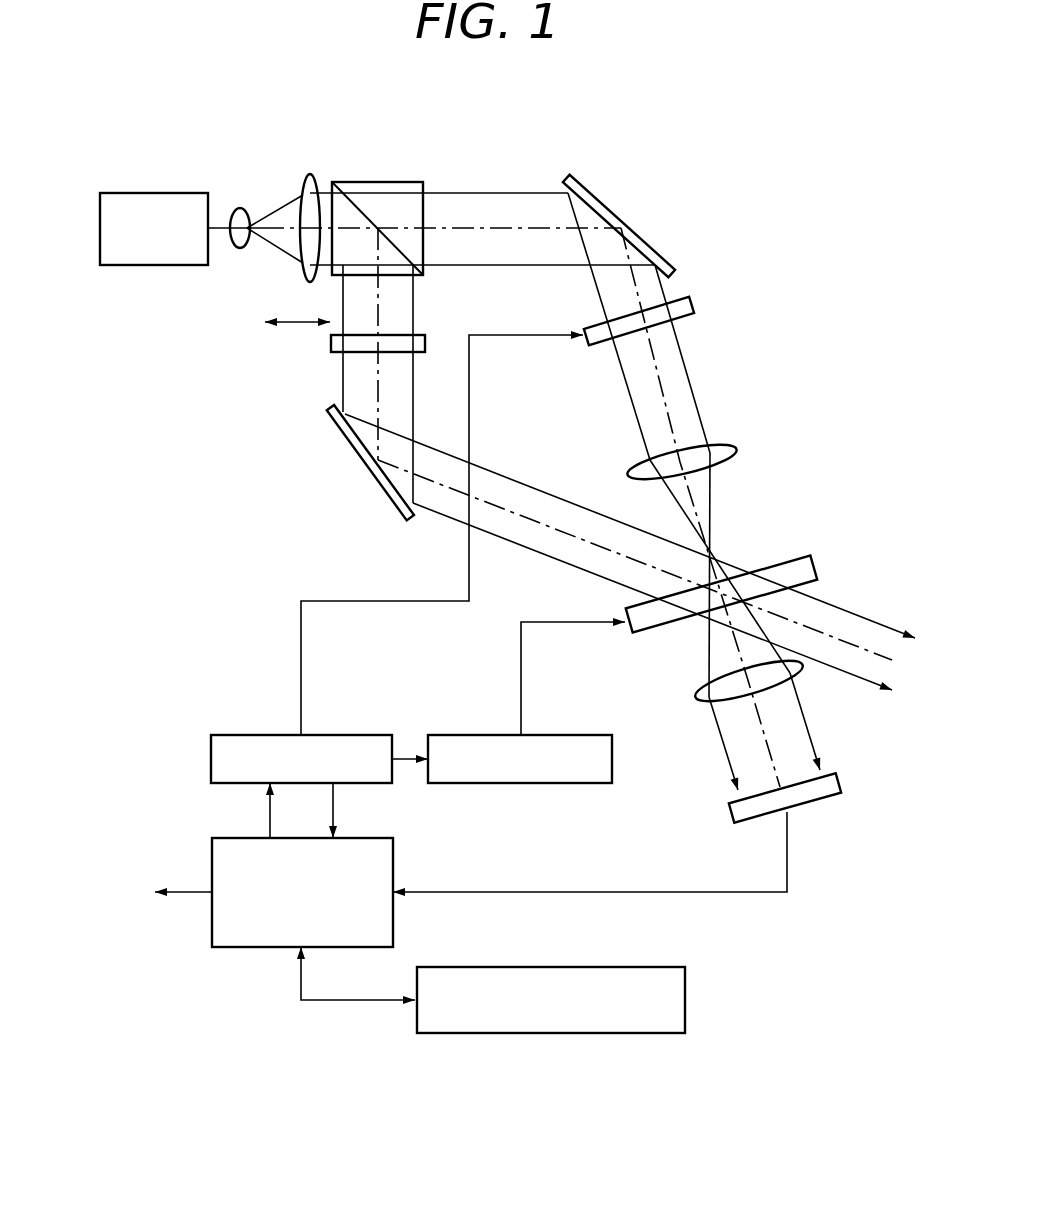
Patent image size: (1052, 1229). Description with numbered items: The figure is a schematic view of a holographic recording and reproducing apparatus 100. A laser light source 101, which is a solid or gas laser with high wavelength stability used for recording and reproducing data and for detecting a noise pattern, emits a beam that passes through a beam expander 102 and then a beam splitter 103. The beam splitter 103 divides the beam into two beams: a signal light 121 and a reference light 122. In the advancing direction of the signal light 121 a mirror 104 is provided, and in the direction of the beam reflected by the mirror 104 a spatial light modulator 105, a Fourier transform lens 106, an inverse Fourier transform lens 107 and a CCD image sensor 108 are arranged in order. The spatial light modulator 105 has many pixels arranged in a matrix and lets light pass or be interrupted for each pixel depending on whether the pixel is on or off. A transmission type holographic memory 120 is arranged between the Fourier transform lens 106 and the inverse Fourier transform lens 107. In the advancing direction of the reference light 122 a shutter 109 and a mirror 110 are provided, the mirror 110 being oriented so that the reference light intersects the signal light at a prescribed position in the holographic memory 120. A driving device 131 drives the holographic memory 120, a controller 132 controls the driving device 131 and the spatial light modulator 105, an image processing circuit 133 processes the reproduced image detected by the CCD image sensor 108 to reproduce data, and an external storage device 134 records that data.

The holographic recording and reproducing apparatus 100 is at (702, 119).
The laser light source 101 is at (137, 267).
The beam expander 102 is at (325, 167).
The beam splitter 103 is at (397, 180).
The mirror 104 is at (618, 208).
The spatial light modulator 105 is at (690, 299).
The Fourier transform lens 106 is at (737, 452).
The inverse Fourier transform lens 107 is at (697, 704).
The CCD image sensor 108 is at (840, 778).
The shutter 109 is at (331, 343).
The mirror 110 is at (356, 455).
The holographic memory 120 is at (815, 566).
The signal light 121 is at (505, 266).
The reference light 122 is at (343, 372).
The driving device 131 is at (565, 735).
The controller 132 is at (345, 735).
The image processing circuit 133 is at (397, 863).
The external storage device 134 is at (687, 990).